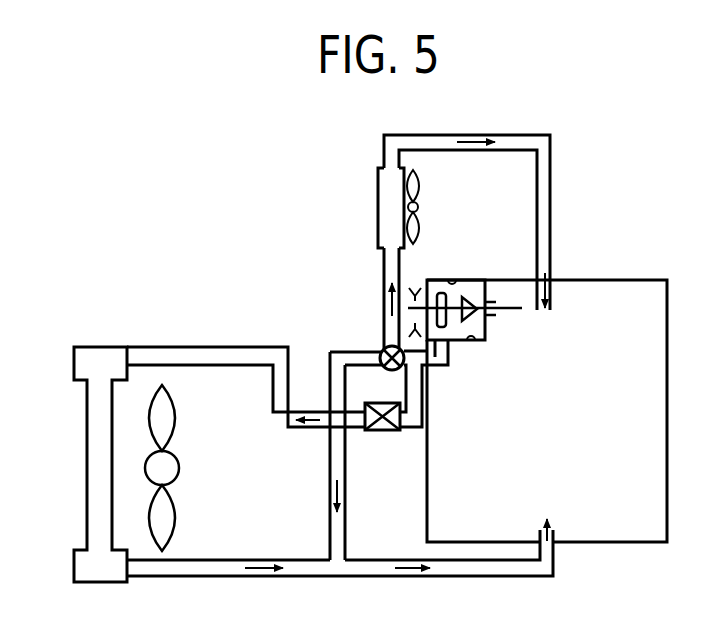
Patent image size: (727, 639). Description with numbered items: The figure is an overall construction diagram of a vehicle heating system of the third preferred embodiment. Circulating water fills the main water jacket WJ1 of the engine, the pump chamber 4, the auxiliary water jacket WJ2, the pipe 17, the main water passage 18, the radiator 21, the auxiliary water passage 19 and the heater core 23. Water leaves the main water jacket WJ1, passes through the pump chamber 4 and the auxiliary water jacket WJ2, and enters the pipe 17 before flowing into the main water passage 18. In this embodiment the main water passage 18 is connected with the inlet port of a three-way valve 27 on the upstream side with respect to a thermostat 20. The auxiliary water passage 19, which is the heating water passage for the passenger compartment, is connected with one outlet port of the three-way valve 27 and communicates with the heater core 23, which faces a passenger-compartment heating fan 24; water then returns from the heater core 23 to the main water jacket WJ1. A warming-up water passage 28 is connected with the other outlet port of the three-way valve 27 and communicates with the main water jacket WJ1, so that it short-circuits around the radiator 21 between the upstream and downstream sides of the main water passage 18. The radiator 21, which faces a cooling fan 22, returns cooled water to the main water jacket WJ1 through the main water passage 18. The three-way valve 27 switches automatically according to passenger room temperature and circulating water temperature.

The pump chamber 4 is at (465, 309).
The pipe 17 is at (442, 365).
The main water passage 18 is at (418, 430).
The auxiliary water passage 19 is at (384, 305).
The thermostat 20 is at (384, 431).
The radiator 21 is at (98, 459).
The cooling fan 22 is at (165, 470).
The heater core 23 is at (378, 212).
The passenger-compartment heating fan 24 is at (420, 210).
The 3-way valve 27 is at (381, 350).
The warming-up water passage 28 is at (330, 487).
The main water jacket WJ1 is at (547, 411).
The auxiliary water jacket WJ2 is at (452, 280).